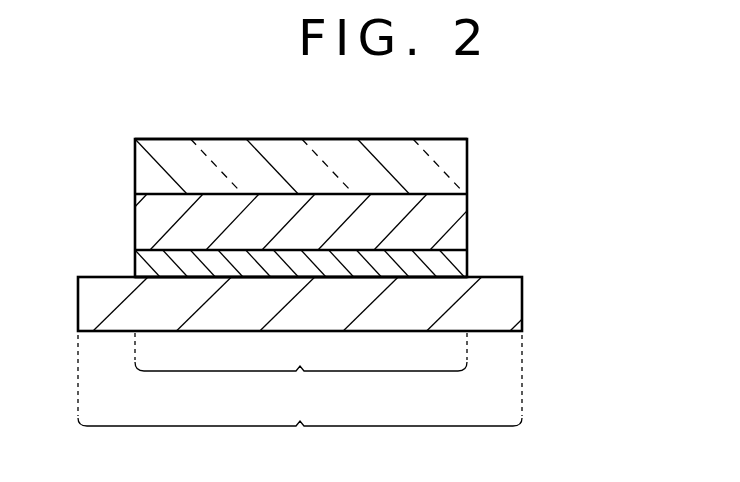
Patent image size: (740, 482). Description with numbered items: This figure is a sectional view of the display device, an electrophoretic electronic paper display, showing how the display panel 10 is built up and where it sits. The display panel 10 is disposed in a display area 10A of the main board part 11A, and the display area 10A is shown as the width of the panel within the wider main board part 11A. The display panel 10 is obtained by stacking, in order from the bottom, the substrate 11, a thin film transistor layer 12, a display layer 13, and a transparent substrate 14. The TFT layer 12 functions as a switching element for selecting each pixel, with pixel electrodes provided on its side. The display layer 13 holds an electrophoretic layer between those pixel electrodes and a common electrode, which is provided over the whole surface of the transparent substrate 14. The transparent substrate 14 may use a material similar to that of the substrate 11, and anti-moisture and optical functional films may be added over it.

The display panel 10 is at (605, 150).
The substrate 11 is at (513, 303).
The thin film transistor (TFT) layer 12 is at (467, 260).
The display layer 13 is at (467, 218).
The transparent substrate 14 is at (467, 163).
The display area 10A is at (301, 368).
The main board part 11A is at (300, 396).